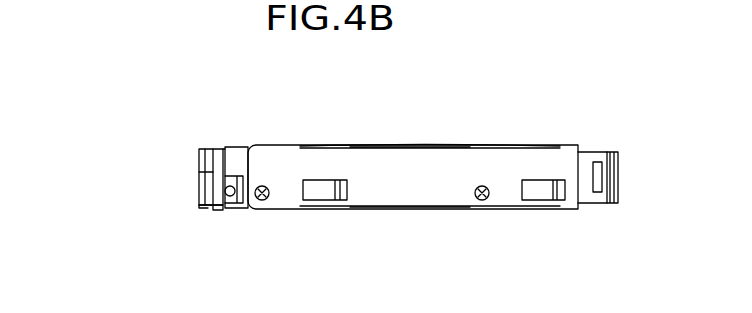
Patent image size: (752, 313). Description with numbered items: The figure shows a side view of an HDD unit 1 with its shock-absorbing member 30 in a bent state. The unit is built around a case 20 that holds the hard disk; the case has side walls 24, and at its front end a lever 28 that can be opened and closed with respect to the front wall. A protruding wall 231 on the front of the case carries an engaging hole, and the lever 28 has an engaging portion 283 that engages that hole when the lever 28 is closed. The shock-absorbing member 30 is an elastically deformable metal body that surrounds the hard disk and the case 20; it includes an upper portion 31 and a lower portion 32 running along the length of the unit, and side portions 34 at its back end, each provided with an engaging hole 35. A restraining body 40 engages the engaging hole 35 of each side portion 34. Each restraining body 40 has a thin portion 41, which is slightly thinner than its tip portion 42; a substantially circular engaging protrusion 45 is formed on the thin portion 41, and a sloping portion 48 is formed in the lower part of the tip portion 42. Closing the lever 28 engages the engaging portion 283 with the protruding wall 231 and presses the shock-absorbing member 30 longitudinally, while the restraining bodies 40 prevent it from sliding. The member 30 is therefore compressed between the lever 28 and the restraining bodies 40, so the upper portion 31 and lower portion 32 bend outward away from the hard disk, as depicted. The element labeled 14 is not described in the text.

The HDD unit 1 is at (555, 112).
The cap 14 is at (213, 148).
The case 20 is at (515, 211).
The side wall 24 is at (472, 148).
The lever 28 is at (617, 180).
The shock-absorbing member 30 is at (345, 146).
The upper portion 31 is at (408, 146).
The lower portion 32 is at (412, 210).
The side portion 34 is at (245, 147).
The engaging hole 35 is at (233, 197).
The restraining body 40 is at (208, 208).
The thin portion 41 is at (223, 148).
The tip portion 42 is at (205, 177).
The engaging protrusion 45 is at (228, 204).
The sloping portion 48 is at (200, 190).
The protruding wall 231 is at (587, 185).
The engaging portion 283 is at (598, 190).